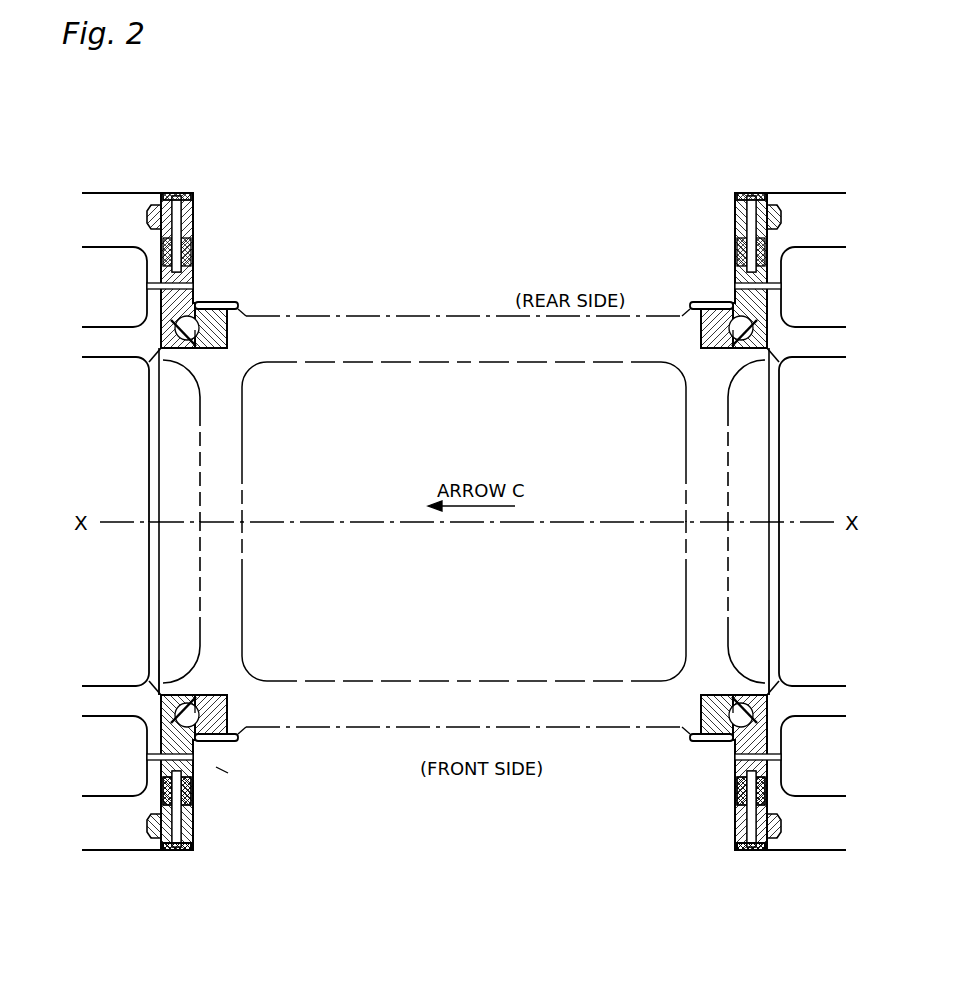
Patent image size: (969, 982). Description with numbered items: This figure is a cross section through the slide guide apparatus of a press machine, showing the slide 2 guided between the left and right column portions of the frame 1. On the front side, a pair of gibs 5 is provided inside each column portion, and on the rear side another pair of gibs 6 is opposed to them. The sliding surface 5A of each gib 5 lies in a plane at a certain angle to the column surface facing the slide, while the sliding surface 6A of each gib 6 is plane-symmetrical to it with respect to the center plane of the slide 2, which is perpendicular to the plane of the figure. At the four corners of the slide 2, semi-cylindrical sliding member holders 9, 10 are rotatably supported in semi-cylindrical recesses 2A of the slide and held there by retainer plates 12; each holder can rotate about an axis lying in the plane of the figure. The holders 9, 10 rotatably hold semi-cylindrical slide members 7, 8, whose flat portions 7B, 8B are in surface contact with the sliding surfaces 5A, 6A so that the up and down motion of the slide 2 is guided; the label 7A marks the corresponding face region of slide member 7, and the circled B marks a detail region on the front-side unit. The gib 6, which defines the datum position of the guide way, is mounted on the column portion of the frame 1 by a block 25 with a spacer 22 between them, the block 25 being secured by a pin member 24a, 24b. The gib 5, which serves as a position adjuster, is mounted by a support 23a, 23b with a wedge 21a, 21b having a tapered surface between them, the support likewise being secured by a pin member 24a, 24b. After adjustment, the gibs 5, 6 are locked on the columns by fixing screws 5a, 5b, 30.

The frame 1 is at (108, 207).
The slide 2 is at (457, 337).
The semi-cylindrical recess 2A is at (242, 322).
The gib 5 is at (165, 690).
The sliding surface 5A is at (206, 692).
The fixing screw 5a is at (150, 752).
The fixing screw 5b is at (194, 286).
The gib 6 is at (161, 345).
The sliding surface 6A is at (205, 348).
The semi-cylindrical slide member 7 is at (196, 688).
The front flange inner face 7A is at (162, 688).
The flat portion 7B is at (158, 785).
The semi-cylindrical slide member 8 is at (198, 343).
The flat portion 8B is at (160, 306).
The sliding member holder 9 is at (215, 705).
The sliding member holder 10 is at (232, 351).
The retainer plate 12 is at (224, 300).
The wedge 21a is at (195, 790).
The wedge 21b is at (464, 815).
The spacer 22 is at (194, 255).
The support 23a is at (270, 912).
The support 23b is at (464, 876).
The pin member 24a is at (197, 196).
The pin member 24b is at (464, 471).
The block 25 is at (194, 197).
The fixing screw 30 is at (178, 194).
The detail B is at (218, 767).